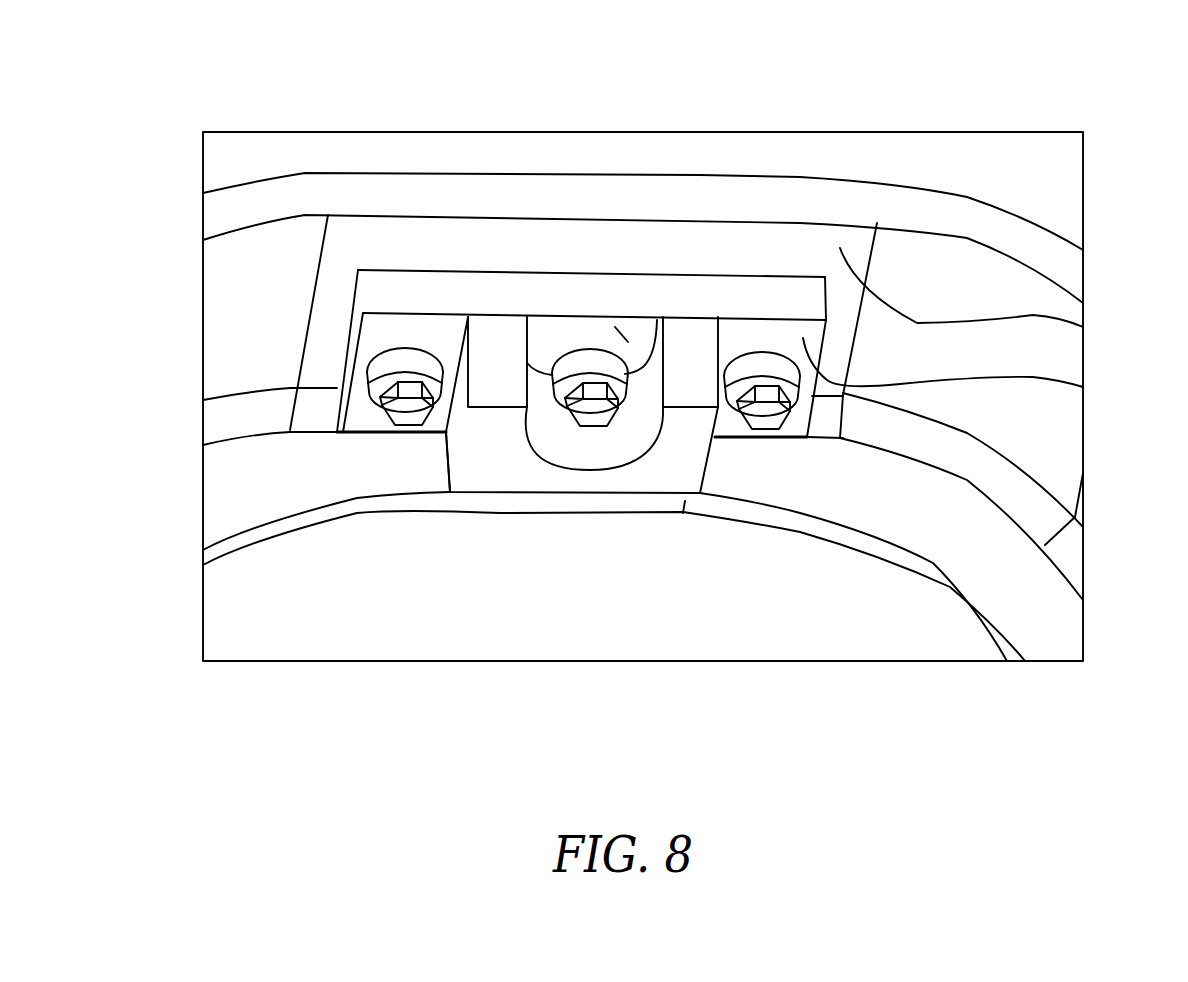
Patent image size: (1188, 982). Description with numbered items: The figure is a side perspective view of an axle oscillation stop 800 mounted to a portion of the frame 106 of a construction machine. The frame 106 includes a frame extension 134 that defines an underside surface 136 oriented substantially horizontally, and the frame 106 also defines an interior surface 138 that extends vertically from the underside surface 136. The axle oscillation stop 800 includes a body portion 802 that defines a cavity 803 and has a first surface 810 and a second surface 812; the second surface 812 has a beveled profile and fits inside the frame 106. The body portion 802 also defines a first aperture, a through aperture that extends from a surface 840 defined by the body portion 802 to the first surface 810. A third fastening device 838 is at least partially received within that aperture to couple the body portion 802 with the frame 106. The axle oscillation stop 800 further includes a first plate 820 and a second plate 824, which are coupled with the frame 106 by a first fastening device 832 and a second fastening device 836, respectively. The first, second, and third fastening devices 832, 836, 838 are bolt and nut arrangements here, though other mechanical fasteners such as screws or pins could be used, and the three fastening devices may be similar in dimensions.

The frame 106 is at (1118, 189).
The frame extension 134 is at (458, 195).
The underside surface 136 is at (1083, 327).
The interior surface 138 is at (222, 513).
The body portion 802 is at (546, 396).
The first surface 810 is at (590, 272).
The surface 840 is at (628, 342).
The second plate 824 is at (353, 410).
The second fastening device 836 is at (408, 412).
The axle oscillation stop 800 is at (431, 472).
The second surface 812 is at (487, 473).
The cavity 803 is at (552, 446).
The third fastening device 838 is at (592, 412).
The first fastening device 832 is at (763, 417).
The first plate 820 is at (1083, 387).